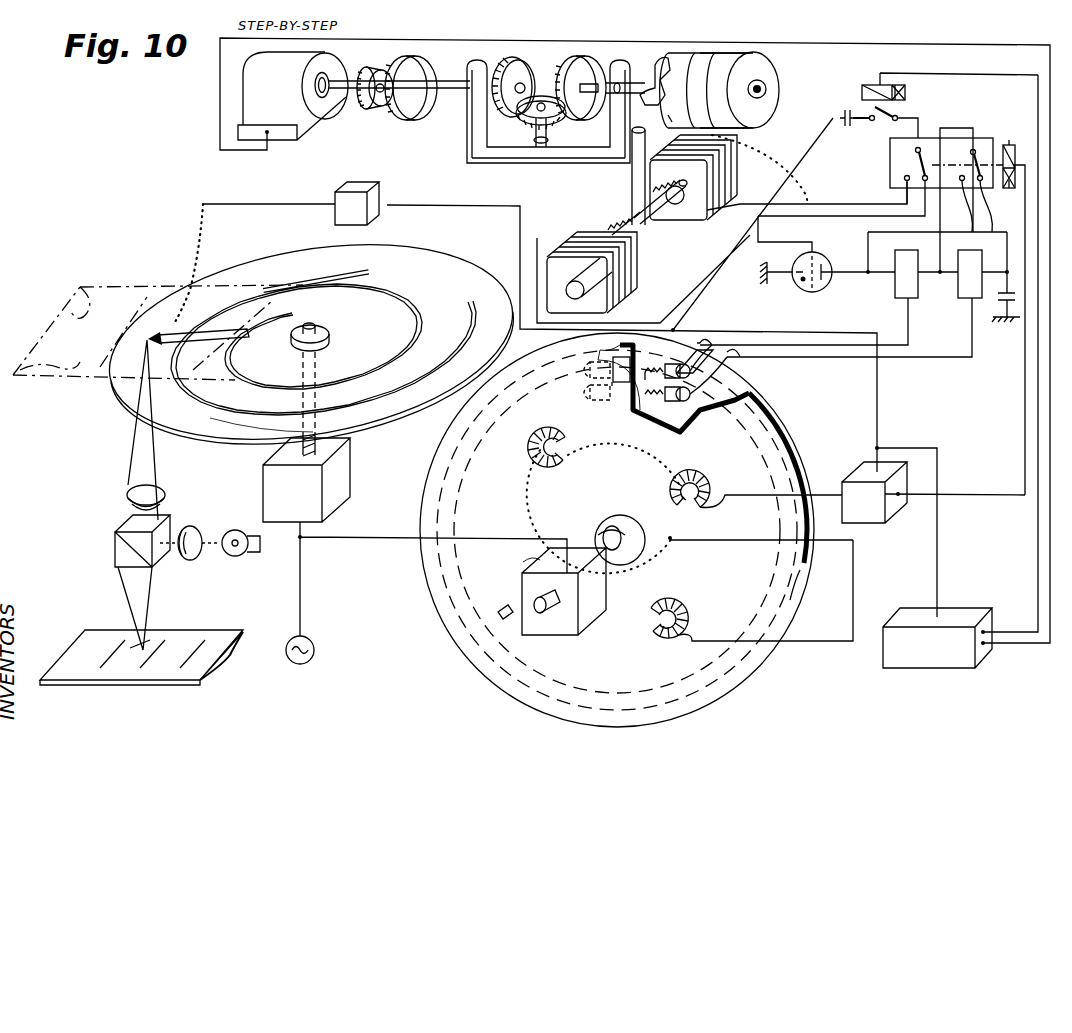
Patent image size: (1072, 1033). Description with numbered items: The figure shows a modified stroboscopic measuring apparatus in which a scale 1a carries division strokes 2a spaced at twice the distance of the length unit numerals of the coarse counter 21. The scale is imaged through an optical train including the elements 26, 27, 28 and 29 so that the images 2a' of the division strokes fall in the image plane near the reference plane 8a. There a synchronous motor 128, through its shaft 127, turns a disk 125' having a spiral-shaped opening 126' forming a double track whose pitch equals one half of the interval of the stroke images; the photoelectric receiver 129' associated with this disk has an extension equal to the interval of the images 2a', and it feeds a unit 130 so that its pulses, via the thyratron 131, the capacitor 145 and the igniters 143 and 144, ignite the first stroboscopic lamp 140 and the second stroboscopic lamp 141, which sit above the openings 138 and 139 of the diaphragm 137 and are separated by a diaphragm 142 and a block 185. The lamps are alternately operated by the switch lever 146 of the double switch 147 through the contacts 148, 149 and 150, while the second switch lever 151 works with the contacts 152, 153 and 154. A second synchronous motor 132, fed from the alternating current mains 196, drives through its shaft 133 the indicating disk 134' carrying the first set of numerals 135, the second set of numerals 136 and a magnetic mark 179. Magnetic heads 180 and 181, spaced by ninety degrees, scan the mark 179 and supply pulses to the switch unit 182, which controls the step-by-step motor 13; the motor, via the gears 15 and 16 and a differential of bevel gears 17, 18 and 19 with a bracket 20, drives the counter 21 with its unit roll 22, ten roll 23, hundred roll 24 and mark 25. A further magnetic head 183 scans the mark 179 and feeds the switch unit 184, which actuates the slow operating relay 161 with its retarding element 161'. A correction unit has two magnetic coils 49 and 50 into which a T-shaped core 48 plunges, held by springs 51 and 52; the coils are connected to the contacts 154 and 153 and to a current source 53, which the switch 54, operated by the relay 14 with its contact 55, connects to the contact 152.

The step-by-step motor 13 is at (312, 110).
The gear 15 is at (378, 103).
The gear 16 is at (418, 106).
The bevel gear 17 is at (528, 76).
The bevel gear 18 is at (522, 120).
The bevel gear 19 is at (582, 102).
The bearing bracket 20 is at (500, 154).
The counter 21 is at (780, 90).
The unit roll 22 is at (770, 118).
The ten roll 23 is at (774, 60).
The hundred roll 24 is at (692, 108).
The mark 25 is at (656, 74).
The relay 14 is at (865, 86).
The relay contact 55 is at (905, 93).
The current source 53 is at (844, 126).
The switch 54 is at (885, 123).
The double switch 147 is at (898, 165).
The second switch lever 151 is at (905, 156).
The contact 152 is at (922, 146).
The contact 153 is at (904, 178).
The contact 154 is at (912, 186).
The contact 150 is at (975, 148).
The contact 148 is at (979, 213).
The contact 149 is at (1004, 206).
The relay 161 is at (984, 152).
The retarding element 161' is at (1013, 197).
The switch lever 146 is at (1009, 144).
The thyratron 131 is at (800, 290).
The igniter 143 is at (903, 286).
The igniter 144 is at (970, 288).
The capacitor 145 is at (1016, 300).
The magnetic coil 50 is at (712, 172).
The magnetic coil 49 is at (588, 240).
The spring 51 is at (612, 224).
The spring 52 is at (647, 200).
The T-shaped core 48 is at (655, 213).
The control unit 130 is at (342, 210).
The spiral-shaped opening 126' is at (311, 344).
The disk 125' is at (256, 444).
The shaft 127 is at (320, 438).
The synchronous motor 128 is at (266, 485).
The photoelectric receiver 129' is at (201, 295).
The images of the division strokes 2a' is at (134, 383).
The reference plane 8a is at (90, 375).
The lens 29 is at (135, 490).
The beam splitter 28 is at (122, 549).
The condenser lens 27 is at (190, 561).
The lamp 26 is at (237, 556).
The scale 1a is at (212, 637).
The division strokes 2a is at (162, 624).
The alternating current mains 196 is at (312, 644).
The indicating disk 134' is at (593, 530).
The set of numerals 135 is at (790, 460).
The set of numerals 136 is at (750, 615).
The diaphragm 137 is at (575, 375).
The opening 138 is at (590, 385).
The opening 139 is at (614, 386).
The first stroboscopic lamp 140 is at (655, 378).
The second stroboscopic lamp 141 is at (668, 400).
The diaphragm 142 is at (715, 378).
The contact block 185 is at (619, 367).
The synchronous motor 132 is at (593, 603).
The shaft 133 is at (585, 546).
The magnetic mark 179 is at (502, 612).
The magnetic head 180 is at (545, 460).
The magnetic head 181 is at (683, 606).
The magnetic head 183 is at (702, 508).
The switch unit 184 is at (900, 512).
The switch unit 182 is at (940, 655).